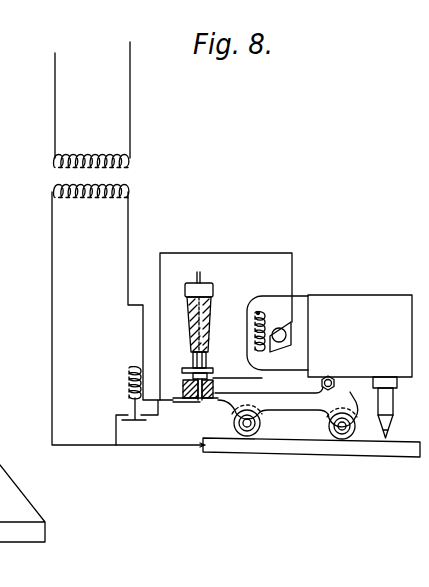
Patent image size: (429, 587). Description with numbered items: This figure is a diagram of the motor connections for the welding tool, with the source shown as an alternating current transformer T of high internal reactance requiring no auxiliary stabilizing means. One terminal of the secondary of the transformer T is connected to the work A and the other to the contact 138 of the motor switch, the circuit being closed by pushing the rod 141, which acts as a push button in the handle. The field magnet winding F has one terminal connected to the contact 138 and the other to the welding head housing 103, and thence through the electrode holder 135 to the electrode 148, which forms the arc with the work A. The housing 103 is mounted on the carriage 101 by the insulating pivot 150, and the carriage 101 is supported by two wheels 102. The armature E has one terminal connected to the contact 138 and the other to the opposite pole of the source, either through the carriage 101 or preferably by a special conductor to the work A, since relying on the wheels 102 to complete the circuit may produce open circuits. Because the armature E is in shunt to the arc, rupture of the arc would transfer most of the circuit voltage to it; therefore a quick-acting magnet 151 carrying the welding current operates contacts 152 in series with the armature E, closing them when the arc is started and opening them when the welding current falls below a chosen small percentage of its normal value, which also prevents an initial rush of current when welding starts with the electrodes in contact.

The transformer T is at (128, 181).
The rod 141 is at (201, 275).
The contact member 138 is at (186, 388).
The magnet 151 is at (129, 383).
The contacts 152 is at (128, 414).
The field magnet winding F is at (256, 330).
The armature E is at (286, 332).
The welding head housing 103 is at (357, 312).
The insulating pivot 150 is at (336, 386).
The electrode holder 135 is at (390, 405).
The electrode 148 is at (388, 429).
The carriage 101 is at (292, 402).
The wheels 102 is at (242, 437).
The work A is at (370, 457).